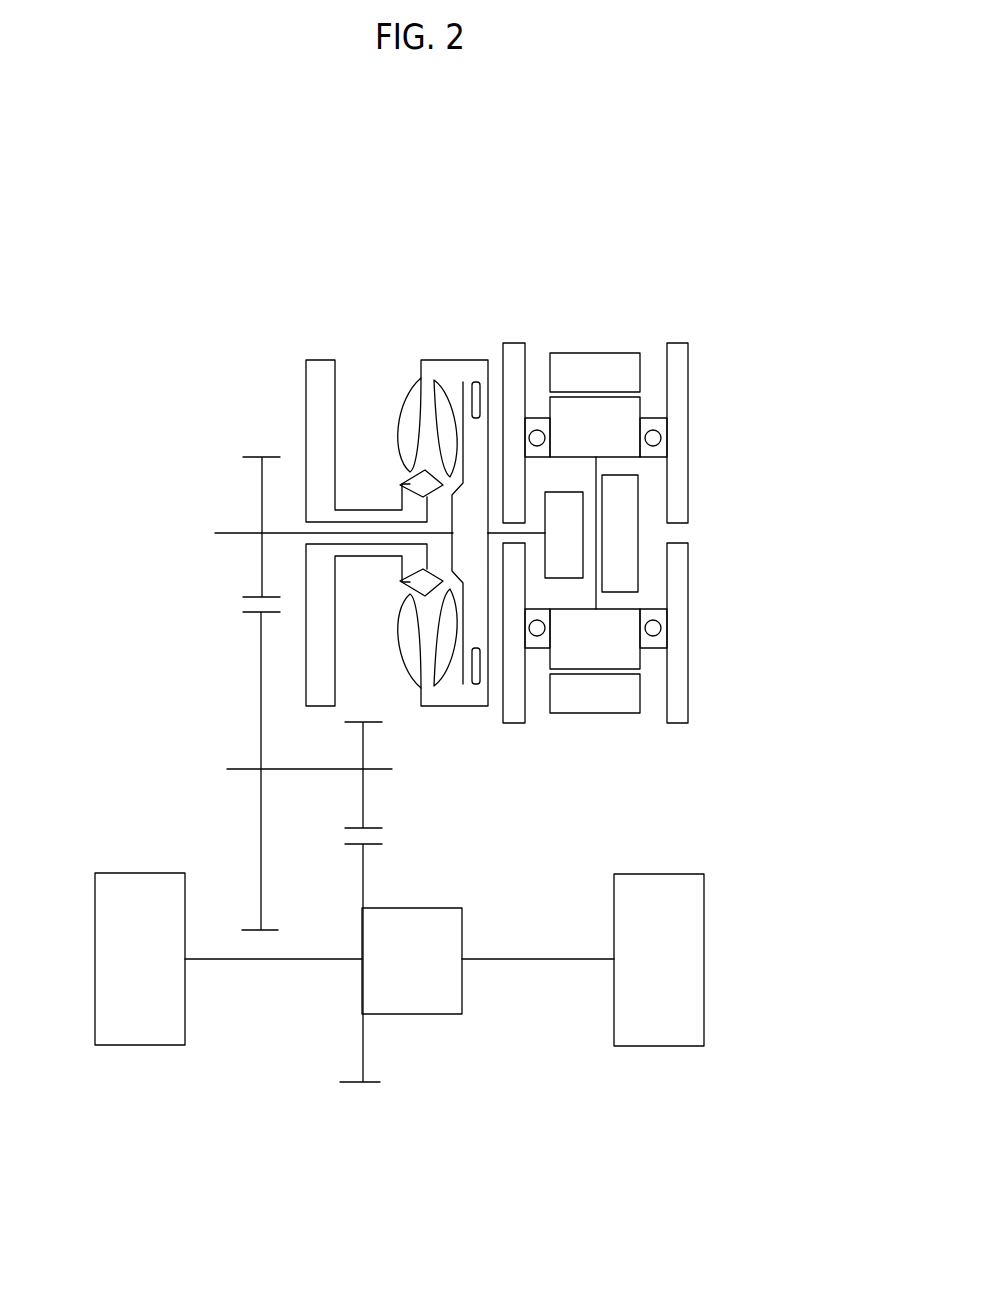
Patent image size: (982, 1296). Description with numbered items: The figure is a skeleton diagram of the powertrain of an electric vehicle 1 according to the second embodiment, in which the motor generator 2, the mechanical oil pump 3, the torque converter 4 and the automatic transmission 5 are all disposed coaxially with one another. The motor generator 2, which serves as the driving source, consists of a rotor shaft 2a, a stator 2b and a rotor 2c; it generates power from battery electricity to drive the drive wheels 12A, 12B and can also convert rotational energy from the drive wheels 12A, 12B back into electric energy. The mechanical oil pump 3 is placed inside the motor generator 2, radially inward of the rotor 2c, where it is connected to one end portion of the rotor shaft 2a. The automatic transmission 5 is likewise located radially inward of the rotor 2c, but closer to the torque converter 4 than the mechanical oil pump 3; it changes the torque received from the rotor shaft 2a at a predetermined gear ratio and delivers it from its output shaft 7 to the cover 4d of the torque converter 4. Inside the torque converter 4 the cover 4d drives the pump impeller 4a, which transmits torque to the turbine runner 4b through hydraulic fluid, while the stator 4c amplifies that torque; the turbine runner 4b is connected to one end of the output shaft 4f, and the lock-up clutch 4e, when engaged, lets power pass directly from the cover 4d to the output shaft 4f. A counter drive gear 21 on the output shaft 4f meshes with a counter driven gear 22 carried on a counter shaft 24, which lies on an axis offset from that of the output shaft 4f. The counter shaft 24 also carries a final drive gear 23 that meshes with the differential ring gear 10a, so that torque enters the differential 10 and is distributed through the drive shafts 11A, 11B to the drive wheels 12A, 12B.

The electric vehicle 1 is at (527, 234).
The motor generator 2 is at (622, 320).
The rotor shaft 2a is at (596, 612).
The stator 2b is at (573, 352).
The rotor 2c is at (644, 410).
The mechanical oil pump 3 is at (641, 537).
The torque converter 4 is at (412, 343).
The pump impeller 4a is at (412, 383).
The turbine runner 4b is at (447, 378).
The stator 4c is at (422, 468).
The cover 4d is at (432, 359).
The lock-up clutch 4e is at (477, 381).
The output shaft 4f is at (302, 530).
The automatic transmission 5 is at (563, 580).
The output shaft 7 is at (497, 545).
The differential 10 is at (428, 1015).
The differential ring gear 10a is at (352, 848).
The drive shaft 11A is at (535, 962).
The drive shaft 11B is at (270, 962).
The drive wheel 12A is at (655, 1048).
The drive wheel 12B is at (137, 1047).
The counter drive gear 21 is at (257, 596).
The counter driven gear 22 is at (252, 614).
The final drive gear 23 is at (372, 828).
The counter shaft 24 is at (326, 771).